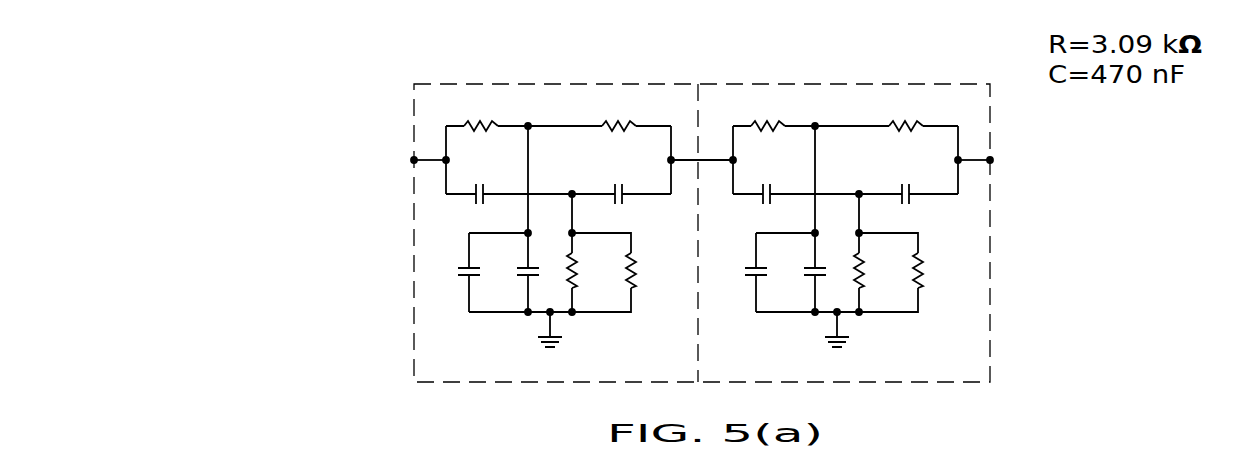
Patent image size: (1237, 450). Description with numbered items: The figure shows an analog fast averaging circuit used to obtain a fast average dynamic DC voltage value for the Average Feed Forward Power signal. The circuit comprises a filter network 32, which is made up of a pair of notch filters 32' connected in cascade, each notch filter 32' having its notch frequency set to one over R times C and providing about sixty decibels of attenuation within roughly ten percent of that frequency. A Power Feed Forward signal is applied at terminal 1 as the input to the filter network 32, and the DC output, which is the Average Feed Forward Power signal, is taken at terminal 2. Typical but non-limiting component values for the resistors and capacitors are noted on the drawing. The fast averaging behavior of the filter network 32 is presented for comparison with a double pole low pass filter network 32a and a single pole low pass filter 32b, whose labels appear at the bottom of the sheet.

The filter network 32 is at (703, 192).
The notch filter 32' is at (701, 226).
The double pole low pass filter network 32a is at (402, 442).
The single pole low pass filter 32b is at (1075, 442).
The terminal 1 is at (419, 160).
The terminal 2 is at (986, 160).